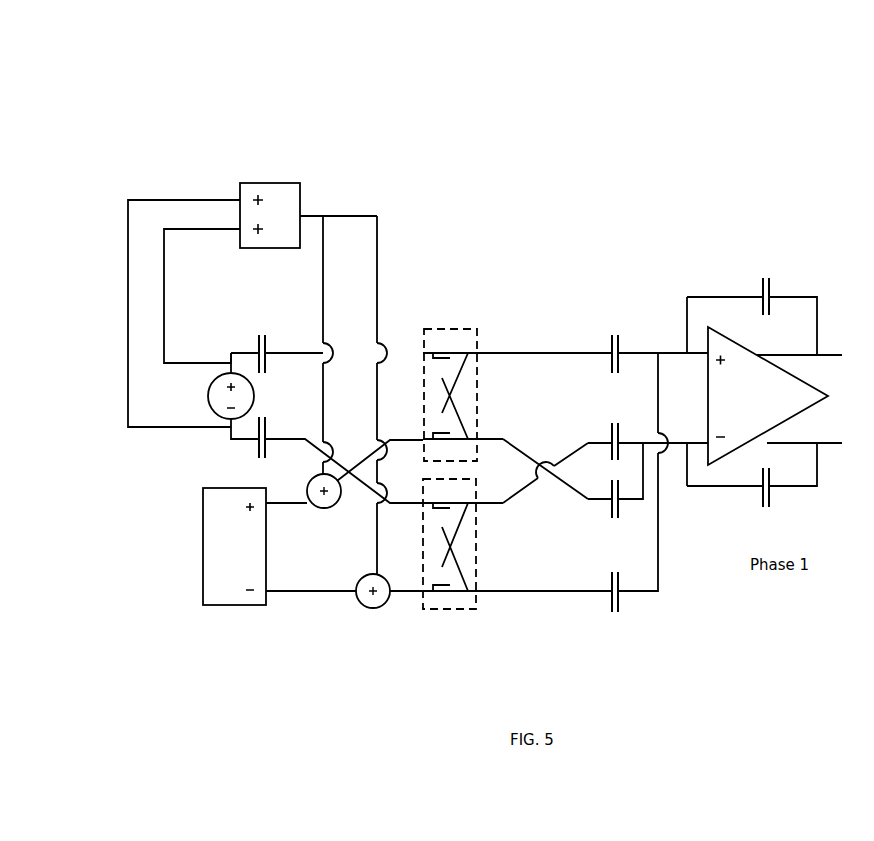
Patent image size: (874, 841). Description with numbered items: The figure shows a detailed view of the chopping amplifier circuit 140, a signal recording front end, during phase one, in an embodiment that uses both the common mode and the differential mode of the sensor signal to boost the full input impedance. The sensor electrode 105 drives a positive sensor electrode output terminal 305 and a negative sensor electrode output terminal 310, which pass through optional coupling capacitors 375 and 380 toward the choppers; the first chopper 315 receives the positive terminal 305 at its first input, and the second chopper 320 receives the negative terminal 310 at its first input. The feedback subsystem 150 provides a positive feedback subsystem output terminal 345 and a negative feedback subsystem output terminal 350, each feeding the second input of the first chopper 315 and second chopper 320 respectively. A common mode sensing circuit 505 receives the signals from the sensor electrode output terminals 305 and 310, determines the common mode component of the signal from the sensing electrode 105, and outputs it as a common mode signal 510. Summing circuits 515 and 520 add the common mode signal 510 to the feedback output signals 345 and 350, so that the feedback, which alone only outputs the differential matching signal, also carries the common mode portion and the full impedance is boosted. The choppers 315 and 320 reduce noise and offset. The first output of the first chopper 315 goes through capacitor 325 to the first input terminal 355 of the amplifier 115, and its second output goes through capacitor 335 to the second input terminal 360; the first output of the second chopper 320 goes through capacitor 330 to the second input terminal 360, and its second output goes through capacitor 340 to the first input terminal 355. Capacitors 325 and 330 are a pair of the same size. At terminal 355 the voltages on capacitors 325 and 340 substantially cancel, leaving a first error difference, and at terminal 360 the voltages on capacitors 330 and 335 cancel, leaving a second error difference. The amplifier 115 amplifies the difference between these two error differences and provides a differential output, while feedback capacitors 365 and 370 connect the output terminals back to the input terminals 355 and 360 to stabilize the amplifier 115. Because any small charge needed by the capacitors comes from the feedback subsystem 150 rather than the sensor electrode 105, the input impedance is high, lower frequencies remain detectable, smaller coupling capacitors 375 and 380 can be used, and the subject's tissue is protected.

The chopping amplifier circuit 140 is at (76, 60).
The common mode sensing circuit 505 is at (284, 183).
The common mode signal 510 is at (340, 216).
The coupling capacitor 375 is at (256, 335).
The coupling capacitor 380 is at (268, 430).
The sensor electrode output terminal 305 is at (231, 353).
The sensor electrode output terminal 310 is at (231, 439).
The sensor electrode 105 is at (208, 396).
The feedback subsystem 150 is at (203, 540).
The feedback subsystem output terminal 345 is at (268, 503).
The feedback subsystem output terminal 350 is at (266, 591).
The summing circuit 515 is at (324, 508).
The summing circuit 520 is at (373, 608).
The first chopper 315 is at (436, 329).
The second chopper 320 is at (455, 609).
The capacitor 325 is at (603, 336).
The capacitor 330 is at (604, 425).
The capacitor 335 is at (617, 513).
The capacitor 340 is at (603, 572).
The first input terminal 355 is at (690, 353).
The second input terminal 360 is at (690, 443).
The feedback capacitor 365 is at (763, 288).
The feedback capacitor 370 is at (767, 508).
The amplifier 115 is at (800, 372).